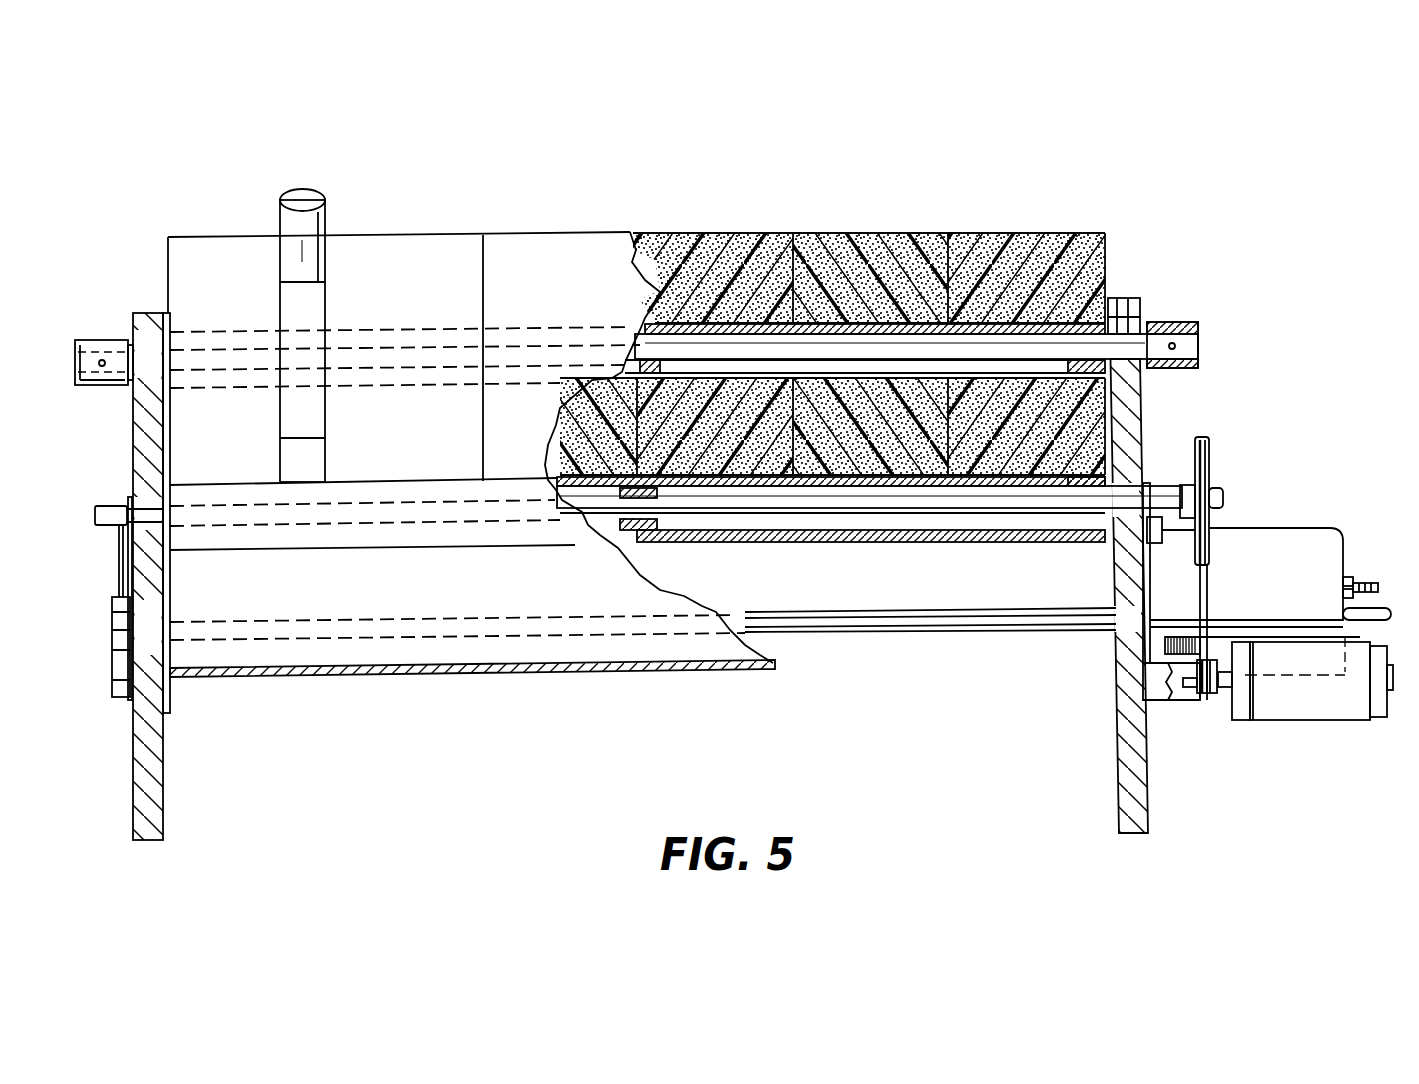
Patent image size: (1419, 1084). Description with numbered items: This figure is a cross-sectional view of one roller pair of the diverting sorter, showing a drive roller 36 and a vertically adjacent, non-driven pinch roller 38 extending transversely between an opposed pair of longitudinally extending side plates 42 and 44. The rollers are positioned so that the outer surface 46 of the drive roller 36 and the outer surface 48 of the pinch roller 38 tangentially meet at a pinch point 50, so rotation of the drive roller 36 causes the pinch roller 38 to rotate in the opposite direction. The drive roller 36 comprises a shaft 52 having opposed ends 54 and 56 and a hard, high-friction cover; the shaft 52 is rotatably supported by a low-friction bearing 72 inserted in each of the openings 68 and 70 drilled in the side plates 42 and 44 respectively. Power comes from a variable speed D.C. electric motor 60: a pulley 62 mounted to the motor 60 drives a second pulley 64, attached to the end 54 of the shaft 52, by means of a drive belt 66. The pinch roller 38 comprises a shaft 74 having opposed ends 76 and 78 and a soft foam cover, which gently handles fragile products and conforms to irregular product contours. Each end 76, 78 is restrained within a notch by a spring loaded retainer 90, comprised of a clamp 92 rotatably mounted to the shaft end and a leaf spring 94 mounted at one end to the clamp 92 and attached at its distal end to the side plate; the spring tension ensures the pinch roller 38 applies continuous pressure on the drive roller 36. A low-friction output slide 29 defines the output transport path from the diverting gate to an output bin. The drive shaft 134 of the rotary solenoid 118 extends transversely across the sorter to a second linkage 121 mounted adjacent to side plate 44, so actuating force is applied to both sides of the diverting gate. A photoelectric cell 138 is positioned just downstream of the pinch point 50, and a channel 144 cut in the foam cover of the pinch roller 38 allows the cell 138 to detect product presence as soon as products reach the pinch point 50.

The output slide 29 is at (404, 658).
The drive roller 36 is at (1244, 494).
The pinch roller 38 is at (1247, 280).
The side plate 42 is at (1143, 780).
The side plate 44 is at (142, 798).
The outer surface of drive roller 46 is at (803, 545).
The outer surface of pinch roller 48 is at (1050, 232).
The pinch point 50 is at (978, 480).
The shaft 52 is at (848, 507).
The shaft end 54 is at (1163, 493).
The shaft end 56 is at (112, 508).
The electric motor 60 is at (1337, 720).
The pulley 62 is at (1208, 702).
The second pulley 64 is at (1211, 450).
The drive belt 66 is at (1213, 582).
The opening 68 is at (1124, 526).
The opening 70 is at (143, 494).
The bearing 72 is at (120, 528).
The shaft 74 is at (815, 345).
The shaft end 76 is at (1199, 346).
The shaft end 78 is at (84, 378).
The spring loaded retainer 90 is at (78, 322).
The clamp 92 is at (76, 350).
The leaf spring 94 is at (115, 338).
The rotary solenoid 118 is at (1340, 565).
The second linkage 121 is at (97, 658).
The drive shaft 134 is at (940, 618).
The photoelectric cell 138 is at (295, 194).
The channel 144 is at (280, 292).